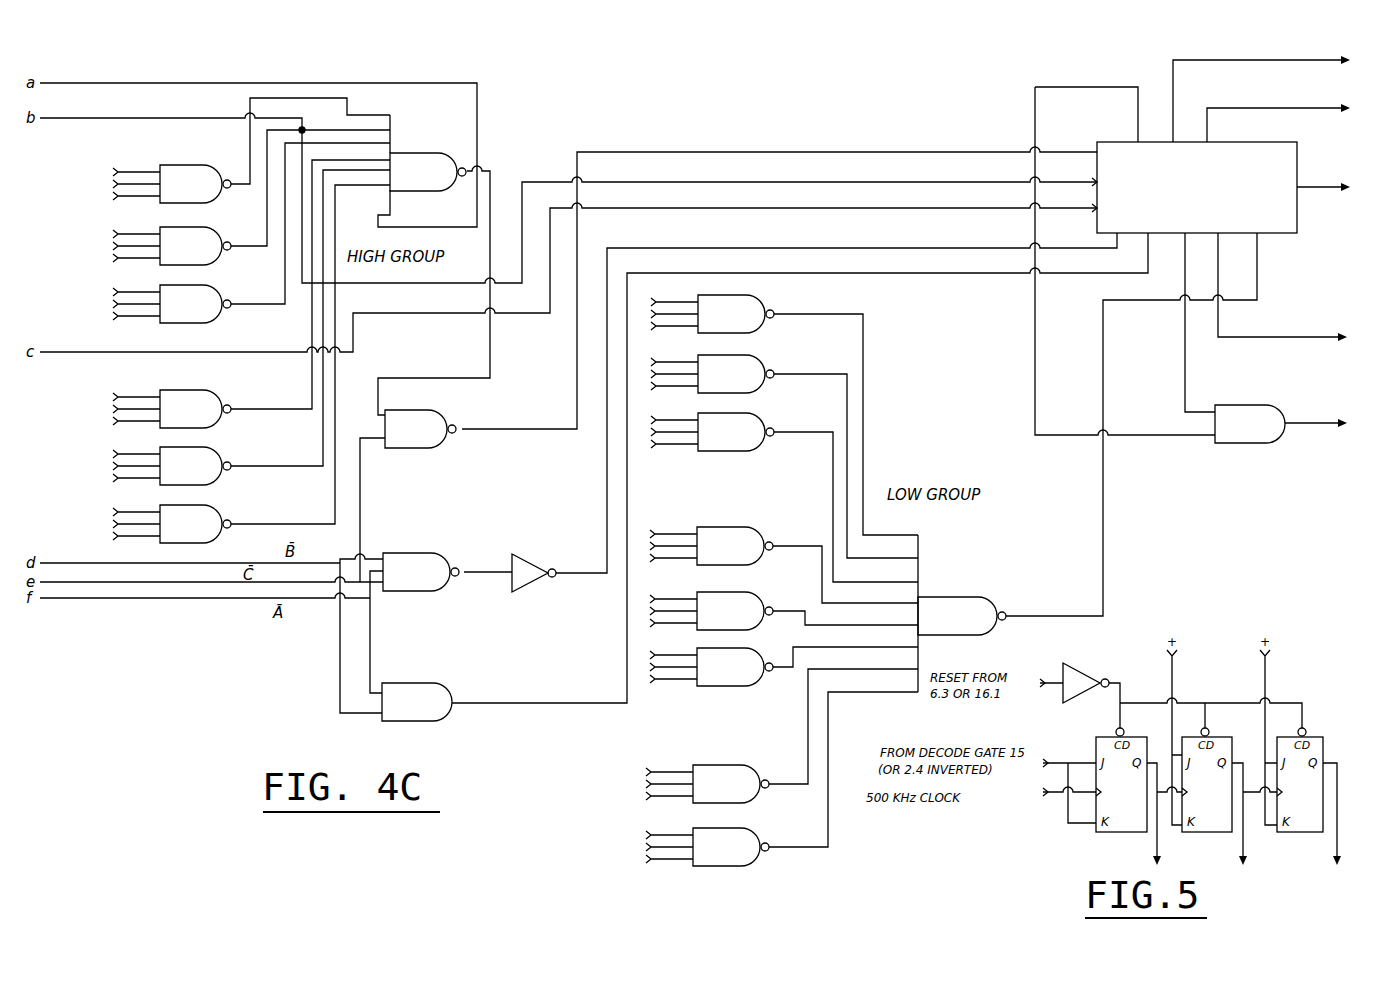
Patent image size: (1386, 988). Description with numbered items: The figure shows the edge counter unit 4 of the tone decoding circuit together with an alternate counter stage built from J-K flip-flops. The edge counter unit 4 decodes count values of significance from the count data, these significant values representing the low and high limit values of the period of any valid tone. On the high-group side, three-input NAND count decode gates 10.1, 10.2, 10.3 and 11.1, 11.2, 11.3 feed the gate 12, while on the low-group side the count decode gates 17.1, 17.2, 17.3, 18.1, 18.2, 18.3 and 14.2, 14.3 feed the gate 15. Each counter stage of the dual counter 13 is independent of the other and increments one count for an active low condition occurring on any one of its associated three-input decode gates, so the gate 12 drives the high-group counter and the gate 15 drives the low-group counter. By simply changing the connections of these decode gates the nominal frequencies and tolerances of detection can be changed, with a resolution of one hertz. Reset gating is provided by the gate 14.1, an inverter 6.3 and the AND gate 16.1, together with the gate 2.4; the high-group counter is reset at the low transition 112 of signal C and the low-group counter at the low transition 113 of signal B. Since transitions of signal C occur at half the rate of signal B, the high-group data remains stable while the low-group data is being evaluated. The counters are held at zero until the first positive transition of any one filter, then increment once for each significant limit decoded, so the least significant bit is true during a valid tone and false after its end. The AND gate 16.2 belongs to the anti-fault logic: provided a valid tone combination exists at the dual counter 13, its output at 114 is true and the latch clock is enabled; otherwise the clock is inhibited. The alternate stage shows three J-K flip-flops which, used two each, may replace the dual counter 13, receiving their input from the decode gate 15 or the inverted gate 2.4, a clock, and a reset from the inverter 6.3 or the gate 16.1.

In FIG. 4C, the edge counter unit 4 is at (525, 500).
In FIG. 4C, the count decode gate 10.1 is at (239, 159).
In FIG. 4C, the count decode gate 10.2 is at (239, 206).
In FIG. 4C, the count decode gate 10.3 is at (239, 242).
In FIG. 4C, the count decode gate 11.1 is at (239, 303).
In FIG. 4C, the count decode gate 11.2 is at (239, 336).
In FIG. 4C, the count decode gate 11.3 is at (239, 373).
In FIG. 4C, the count decode gate 12 is at (434, 284).
In FIG. 4C, the gate 2.4 is at (728, 364).
In FIG. 4C, the reset gating 14.1 is at (447, 581).
In FIG. 4C, the inverter 6.3 is at (814, 412).
In FIG. 4C, the reset gating 16.1 is at (765, 486).
In FIG. 4C, the count decode gate 17.1 is at (772, 415).
In FIG. 4C, the count decode gate 17.2 is at (772, 456).
In FIG. 4C, the count decode gate 17.3 is at (772, 497).
In FIG. 4C, the count decode gate 18.1 is at (771, 565).
In FIG. 4C, the count decode gate 18.2 is at (771, 620).
In FIG. 4C, the count decode gate 18.3 is at (771, 675).
In FIG. 4C, the count decode gate 14.2 is at (769, 745).
In FIG. 4C, the count decode gate 14.3 is at (769, 788).
In FIG. 4C, the count decode gate 15 is at (1087, 462).
In FIG. 5, the count decode gate 15 is at (1069, 783).
In FIG. 4C, the dual counter 13 is at (1203, 243).
In FIG. 4C, the gate 16.2 is at (1293, 433).
In FIG. 4C, the output of gate 16.2 114 is at (1307, 422).
In FIG. 4C, the low transition of signal C 112 is at (875, 245).
In FIG. 4C, the low transition of signal B 113 is at (511, 708).